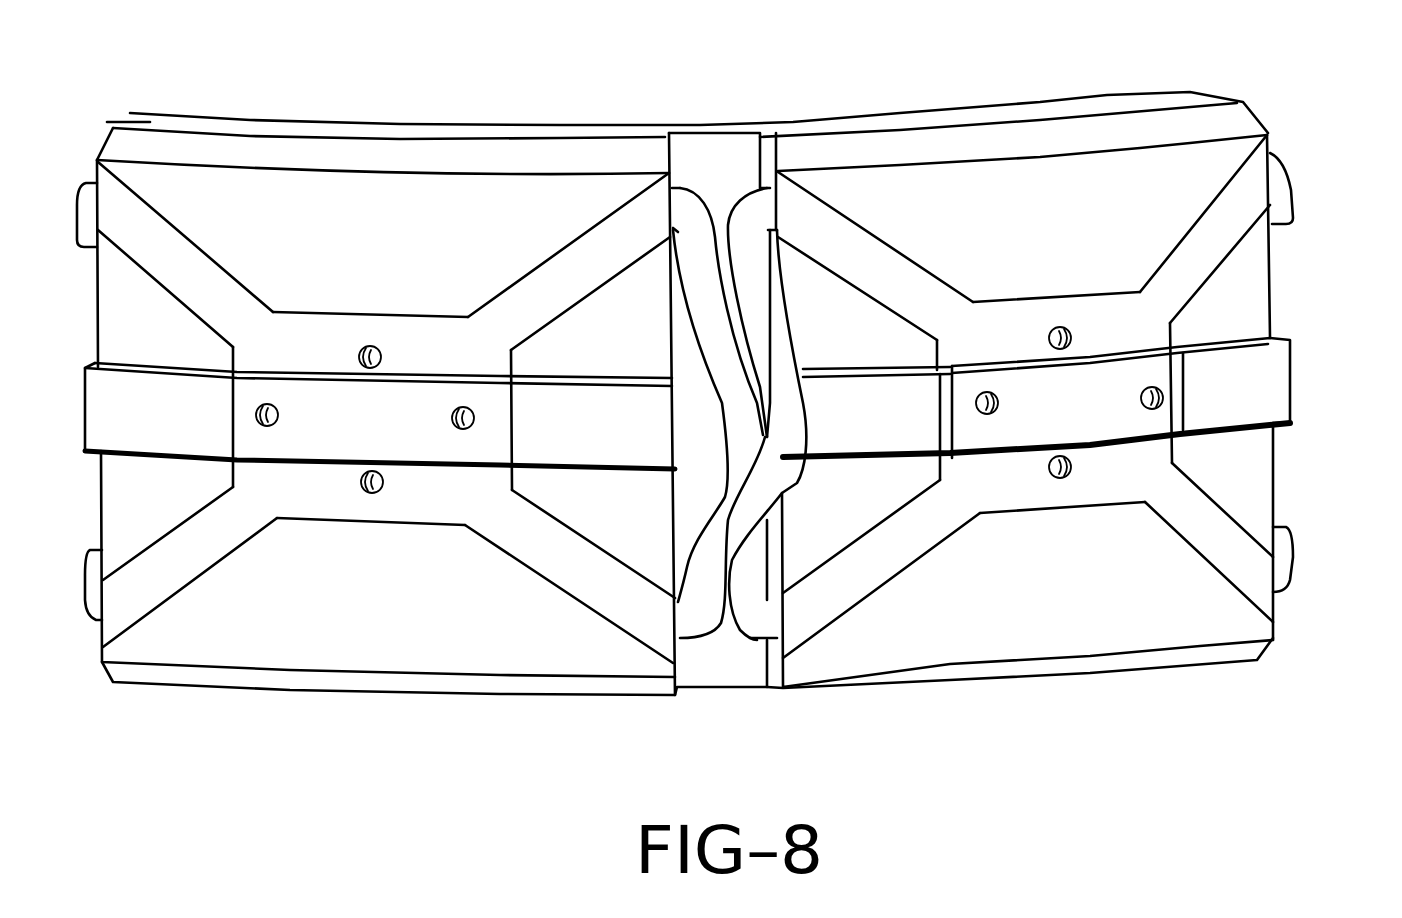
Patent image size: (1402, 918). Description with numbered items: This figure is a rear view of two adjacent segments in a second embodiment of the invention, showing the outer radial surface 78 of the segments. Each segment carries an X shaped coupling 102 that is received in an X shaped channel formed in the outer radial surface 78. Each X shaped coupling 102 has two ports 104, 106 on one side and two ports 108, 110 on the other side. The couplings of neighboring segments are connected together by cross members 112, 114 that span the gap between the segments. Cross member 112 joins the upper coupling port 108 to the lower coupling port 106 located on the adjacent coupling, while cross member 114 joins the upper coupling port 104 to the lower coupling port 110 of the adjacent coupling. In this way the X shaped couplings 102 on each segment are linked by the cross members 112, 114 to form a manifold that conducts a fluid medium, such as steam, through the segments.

The outer radial surface 78 is at (345, 220).
The X shaped coupling 102 is at (420, 326).
The port 104 is at (647, 218).
The port 106 is at (648, 610).
The port 108 is at (125, 218).
The port 110 is at (133, 602).
The cross member 112 is at (770, 372).
The cross member 114 is at (705, 317).